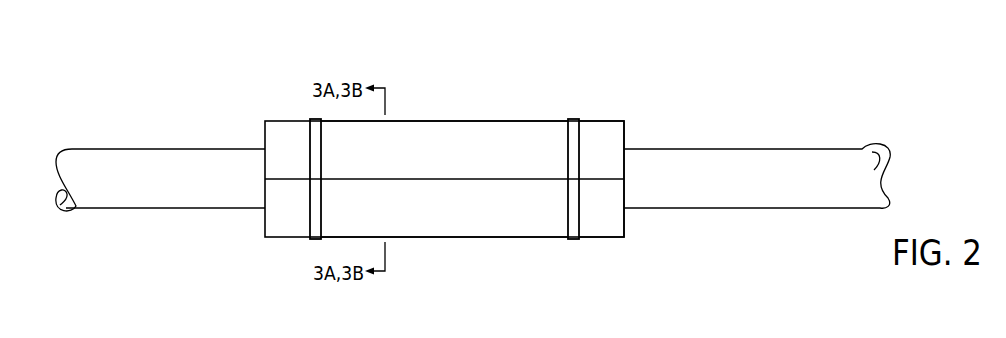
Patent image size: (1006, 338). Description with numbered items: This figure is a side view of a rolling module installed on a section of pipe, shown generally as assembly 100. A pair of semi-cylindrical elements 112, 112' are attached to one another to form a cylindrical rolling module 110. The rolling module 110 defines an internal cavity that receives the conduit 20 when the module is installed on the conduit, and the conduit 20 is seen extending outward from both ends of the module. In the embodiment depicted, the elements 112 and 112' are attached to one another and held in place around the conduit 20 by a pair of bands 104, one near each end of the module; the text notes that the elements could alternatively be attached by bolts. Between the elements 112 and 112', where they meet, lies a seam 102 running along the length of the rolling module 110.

The fluid connector assembly 100 is at (294, 59).
The conduit 20 is at (160, 160).
The rolling module 110 is at (453, 107).
The semi-cylindrical element 112' is at (444, 109).
The semi-cylindrical element 112 is at (444, 263).
The seam 102 is at (602, 178).
The band 104 is at (318, 217).